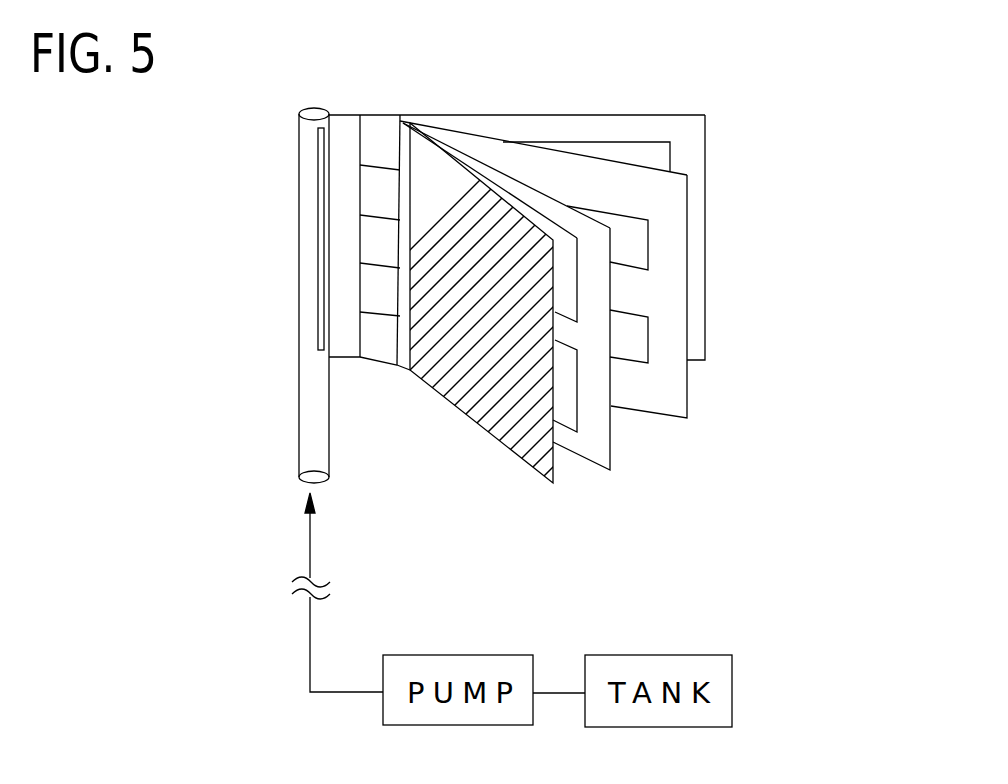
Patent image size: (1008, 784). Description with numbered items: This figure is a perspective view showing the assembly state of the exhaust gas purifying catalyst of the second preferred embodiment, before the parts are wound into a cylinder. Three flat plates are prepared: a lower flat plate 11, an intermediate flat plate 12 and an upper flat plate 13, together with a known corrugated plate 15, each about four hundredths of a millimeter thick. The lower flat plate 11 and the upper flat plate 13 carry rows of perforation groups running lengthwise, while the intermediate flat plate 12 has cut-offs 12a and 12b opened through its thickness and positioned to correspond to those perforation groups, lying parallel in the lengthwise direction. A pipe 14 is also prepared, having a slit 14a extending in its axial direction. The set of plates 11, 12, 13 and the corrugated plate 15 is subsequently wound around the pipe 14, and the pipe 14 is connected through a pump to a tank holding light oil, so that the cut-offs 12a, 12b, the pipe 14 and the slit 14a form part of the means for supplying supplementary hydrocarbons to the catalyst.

The lower flat plate 11 is at (683, 152).
The intermediate flat plate 12 is at (602, 180).
The cut-off 12a is at (630, 338).
The cut-off 12b is at (630, 245).
The upper flat plate 13 is at (530, 205).
The pipe 14 is at (307, 430).
The slit 14a is at (317, 192).
The corrugated plate 15 is at (513, 452).